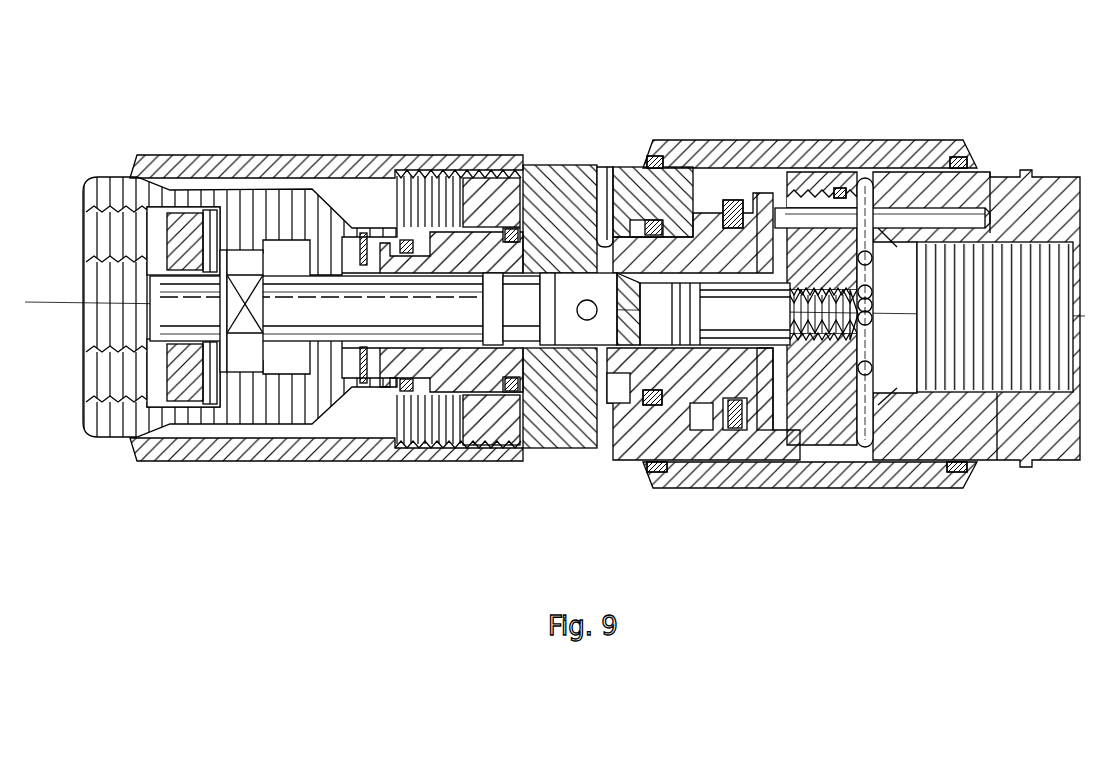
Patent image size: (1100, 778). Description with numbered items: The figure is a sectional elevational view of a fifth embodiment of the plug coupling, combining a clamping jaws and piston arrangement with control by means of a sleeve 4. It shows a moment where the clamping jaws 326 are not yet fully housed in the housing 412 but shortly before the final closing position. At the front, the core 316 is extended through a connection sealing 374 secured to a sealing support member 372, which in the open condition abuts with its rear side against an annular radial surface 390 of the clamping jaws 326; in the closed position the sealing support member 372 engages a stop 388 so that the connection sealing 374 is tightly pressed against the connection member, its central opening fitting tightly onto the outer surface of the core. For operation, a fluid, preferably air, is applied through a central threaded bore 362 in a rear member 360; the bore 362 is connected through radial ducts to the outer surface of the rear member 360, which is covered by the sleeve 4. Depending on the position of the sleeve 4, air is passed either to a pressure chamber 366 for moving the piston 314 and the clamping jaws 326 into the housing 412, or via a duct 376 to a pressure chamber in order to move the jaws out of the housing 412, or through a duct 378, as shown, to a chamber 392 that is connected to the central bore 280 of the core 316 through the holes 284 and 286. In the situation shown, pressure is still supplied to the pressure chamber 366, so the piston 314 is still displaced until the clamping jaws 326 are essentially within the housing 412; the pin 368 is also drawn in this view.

The sleeve 4 is at (800, 482).
The central bore 280 is at (327, 400).
The radial holes 284 is at (589, 321).
The radial holes 286 is at (565, 345).
The piston 314 is at (543, 262).
The core 316 is at (700, 445).
The clamping jaws 326 is at (289, 190).
The rear member 360 is at (1038, 428).
The central threaded bore 362 is at (1000, 372).
The pressure chamber 366 is at (703, 205).
The locking pin with balls 368 is at (867, 410).
The sealing support member 372 is at (217, 395).
The connection sealing 374 is at (180, 385).
The duct 376 is at (893, 218).
The duct 378 is at (616, 235).
The stop 388 is at (240, 250).
The annular radial surface 390 is at (223, 390).
The chamber 392 is at (632, 185).
The housing 412 is at (403, 157).